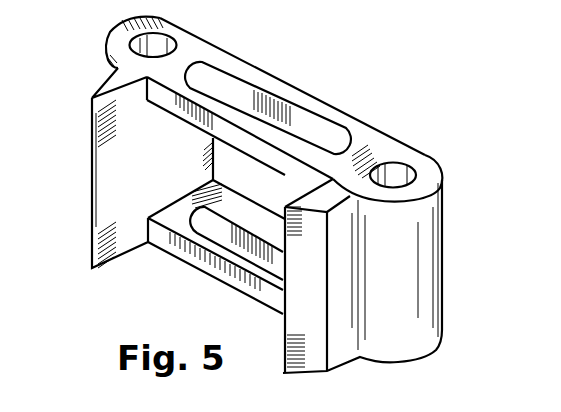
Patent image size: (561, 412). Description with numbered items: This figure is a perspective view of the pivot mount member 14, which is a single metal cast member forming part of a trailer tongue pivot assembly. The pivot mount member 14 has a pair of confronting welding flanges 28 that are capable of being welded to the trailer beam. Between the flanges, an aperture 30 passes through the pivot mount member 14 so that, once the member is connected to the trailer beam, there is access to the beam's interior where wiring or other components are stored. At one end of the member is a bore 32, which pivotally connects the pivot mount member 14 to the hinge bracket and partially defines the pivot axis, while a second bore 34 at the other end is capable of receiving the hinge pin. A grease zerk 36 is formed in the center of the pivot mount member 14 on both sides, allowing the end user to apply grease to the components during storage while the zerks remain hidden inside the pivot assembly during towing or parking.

The pivot mount member 14 is at (371, 96).
The welding flanges 28 is at (92, 247).
The aperture 30 is at (258, 177).
The bore 32 is at (397, 175).
The bore 34 is at (152, 44).
The grease zerk 36 is at (262, 110).